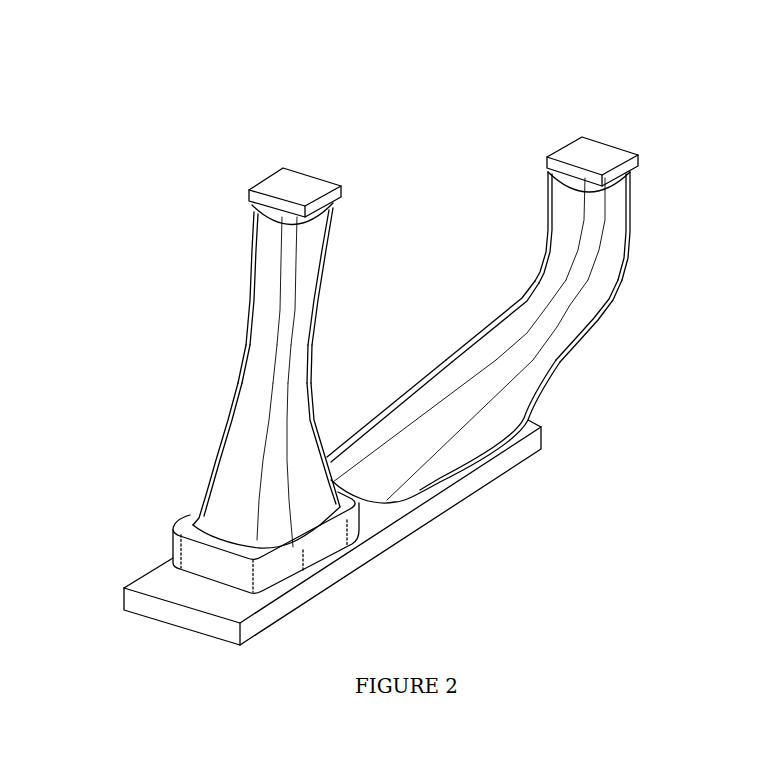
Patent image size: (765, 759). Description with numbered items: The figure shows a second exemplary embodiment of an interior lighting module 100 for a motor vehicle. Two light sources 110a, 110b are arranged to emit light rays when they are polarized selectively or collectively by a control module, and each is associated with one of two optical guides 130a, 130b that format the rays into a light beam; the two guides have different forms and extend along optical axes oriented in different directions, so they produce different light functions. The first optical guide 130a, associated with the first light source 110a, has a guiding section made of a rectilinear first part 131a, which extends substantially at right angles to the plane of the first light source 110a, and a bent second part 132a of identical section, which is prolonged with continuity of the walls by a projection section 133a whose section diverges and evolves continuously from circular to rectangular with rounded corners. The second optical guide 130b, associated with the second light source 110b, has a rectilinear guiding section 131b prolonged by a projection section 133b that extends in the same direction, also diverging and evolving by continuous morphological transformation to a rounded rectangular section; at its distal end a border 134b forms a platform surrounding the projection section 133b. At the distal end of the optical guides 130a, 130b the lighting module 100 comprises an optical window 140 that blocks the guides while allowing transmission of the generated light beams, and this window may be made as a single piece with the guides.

The interior lighting module 100 is at (390, 202).
The first light source 110a is at (595, 148).
The second light source 110b is at (297, 178).
The first optical guide 130a is at (530, 264).
The second optical guide 130b is at (216, 365).
The rectilinear first part of the guiding section 131a is at (638, 175).
The guiding section 131b is at (222, 205).
The bent second part of the guiding section 132a is at (618, 282).
The projection section 133a is at (588, 365).
The projection section 133b is at (190, 383).
The border 134b is at (150, 508).
The optical window 140 is at (410, 530).